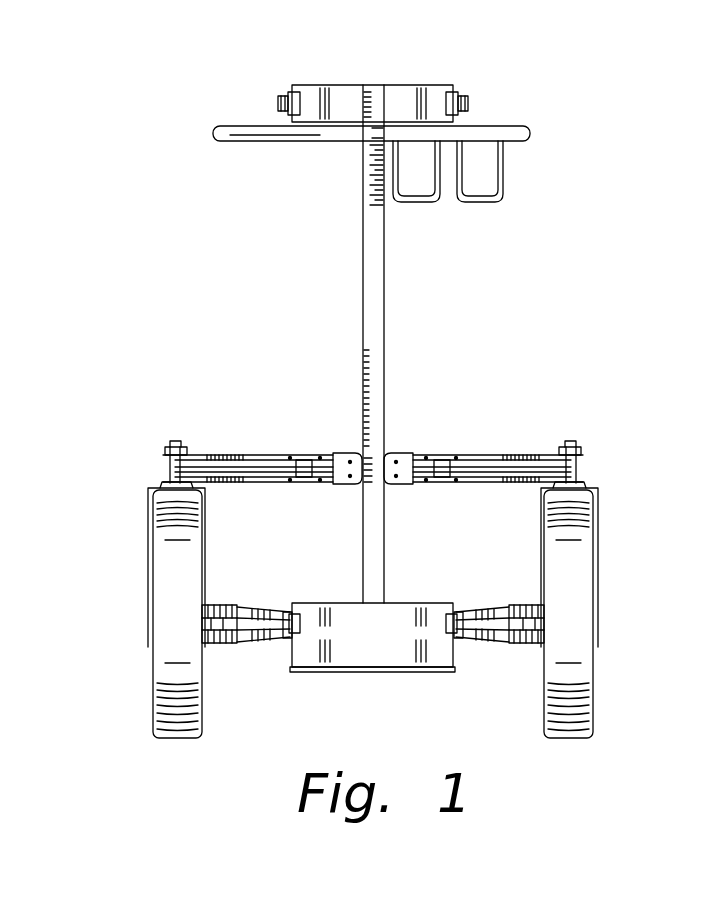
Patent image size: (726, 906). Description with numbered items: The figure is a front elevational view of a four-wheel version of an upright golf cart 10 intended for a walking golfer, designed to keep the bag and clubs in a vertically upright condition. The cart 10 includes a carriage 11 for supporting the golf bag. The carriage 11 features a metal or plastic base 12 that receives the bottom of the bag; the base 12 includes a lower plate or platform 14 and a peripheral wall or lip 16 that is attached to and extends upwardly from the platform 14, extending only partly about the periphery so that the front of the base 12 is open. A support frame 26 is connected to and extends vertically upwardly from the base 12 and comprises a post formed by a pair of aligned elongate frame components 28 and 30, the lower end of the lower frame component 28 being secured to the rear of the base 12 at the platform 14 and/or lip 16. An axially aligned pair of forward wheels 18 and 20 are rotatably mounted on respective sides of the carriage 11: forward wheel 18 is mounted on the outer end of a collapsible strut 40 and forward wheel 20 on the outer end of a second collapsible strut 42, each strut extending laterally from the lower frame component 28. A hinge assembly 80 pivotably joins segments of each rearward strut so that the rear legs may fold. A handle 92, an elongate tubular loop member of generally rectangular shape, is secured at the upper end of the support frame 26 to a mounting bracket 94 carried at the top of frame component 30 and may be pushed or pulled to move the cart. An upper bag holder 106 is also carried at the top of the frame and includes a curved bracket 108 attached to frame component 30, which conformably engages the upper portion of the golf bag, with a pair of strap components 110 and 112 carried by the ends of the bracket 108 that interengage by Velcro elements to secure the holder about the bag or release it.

The upright golf cart 10 is at (186, 323).
The carriage 11 is at (345, 277).
The base 12 is at (350, 672).
The platform 14 is at (393, 658).
The peripheral lip 16 is at (310, 604).
The forward wheel 18 is at (152, 690).
The forward wheel 20 is at (597, 668).
The support frame 26 is at (384, 330).
The lower frame component 28 is at (385, 540).
The upper frame component 30 is at (384, 396).
The collapsible strut 40 is at (238, 645).
The collapsible strut 42 is at (497, 640).
The hinge assembly 80 is at (305, 453).
The handle 92 is at (530, 132).
The mounting bracket 94 is at (373, 133).
The upper bag holder 106 is at (405, 102).
The curved bracket 108 is at (313, 102).
The strap component 110 is at (456, 93).
The strap component 112 is at (290, 93).